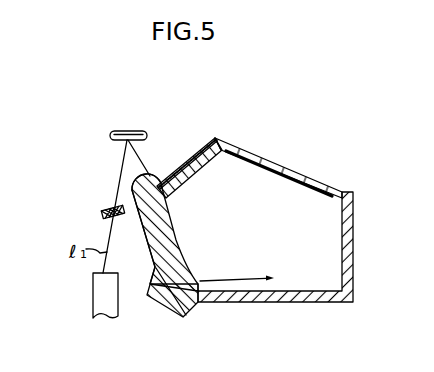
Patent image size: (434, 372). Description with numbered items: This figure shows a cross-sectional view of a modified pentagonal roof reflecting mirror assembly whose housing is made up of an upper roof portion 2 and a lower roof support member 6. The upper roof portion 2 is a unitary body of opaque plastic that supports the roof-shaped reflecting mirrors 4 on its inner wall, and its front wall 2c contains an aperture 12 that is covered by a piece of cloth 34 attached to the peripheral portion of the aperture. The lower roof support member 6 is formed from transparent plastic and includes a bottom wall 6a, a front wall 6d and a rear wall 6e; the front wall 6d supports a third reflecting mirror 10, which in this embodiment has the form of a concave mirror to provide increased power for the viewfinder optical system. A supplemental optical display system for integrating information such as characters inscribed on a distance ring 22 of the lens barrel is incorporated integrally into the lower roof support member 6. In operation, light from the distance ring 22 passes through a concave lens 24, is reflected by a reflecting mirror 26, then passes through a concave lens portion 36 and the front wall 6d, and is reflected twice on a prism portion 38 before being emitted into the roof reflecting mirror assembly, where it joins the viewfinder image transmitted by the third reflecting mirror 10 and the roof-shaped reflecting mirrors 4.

The upper roof portion 2 is at (283, 133).
The front wall of upper roof portion 2c is at (216, 137).
The roof-shaped reflecting mirrors 4 is at (314, 194).
The lower roof support member 6 is at (343, 308).
The bottom wall 6a is at (282, 302).
The front wall 6d is at (157, 257).
The rear wall 6e is at (352, 206).
The third reflecting mirror 10 is at (176, 241).
The aperture 12 is at (190, 167).
The distance ring 22 is at (102, 300).
The concave lens 24 is at (103, 210).
The reflecting mirror 26 is at (110, 134).
The piece of cloth 34 is at (200, 146).
The concave lens portion 36 is at (147, 177).
The prism portion 38 is at (187, 316).